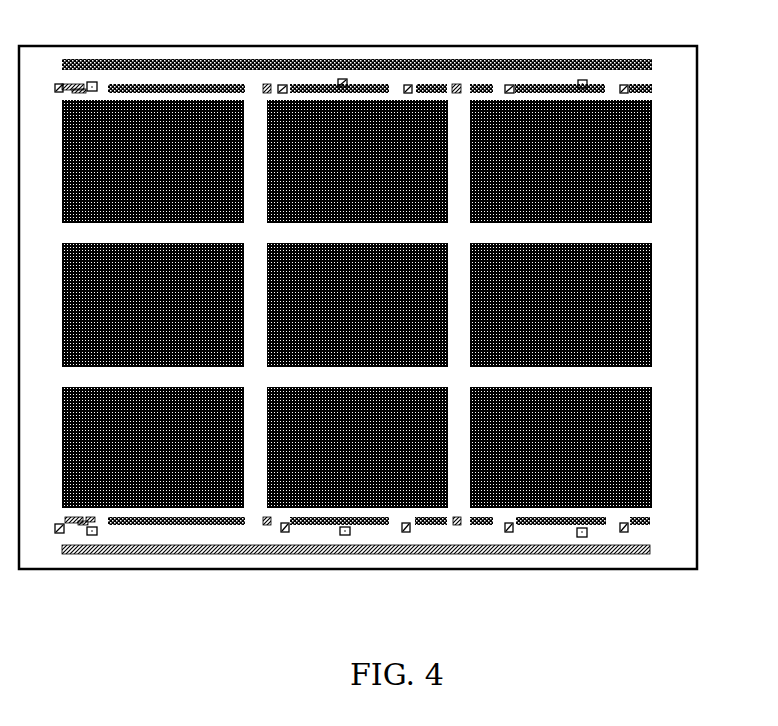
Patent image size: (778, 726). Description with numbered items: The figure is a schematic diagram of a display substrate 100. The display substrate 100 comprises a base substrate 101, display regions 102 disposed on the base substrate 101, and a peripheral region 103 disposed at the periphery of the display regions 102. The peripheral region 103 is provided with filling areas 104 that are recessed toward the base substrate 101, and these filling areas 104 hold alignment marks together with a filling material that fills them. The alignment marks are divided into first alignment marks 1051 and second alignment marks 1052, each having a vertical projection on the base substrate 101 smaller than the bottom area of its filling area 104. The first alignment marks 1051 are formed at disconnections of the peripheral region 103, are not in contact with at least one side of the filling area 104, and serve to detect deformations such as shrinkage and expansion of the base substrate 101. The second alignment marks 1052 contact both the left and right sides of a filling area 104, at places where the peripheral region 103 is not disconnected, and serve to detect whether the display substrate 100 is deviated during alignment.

The display substrate 100 is at (390, 308).
The base substrate 101 is at (690, 72).
The display regions 102 is at (652, 130).
The peripheral region 103 is at (600, 84).
The filling areas 104 is at (500, 84).
The first alignment marks 1051 is at (408, 86).
The second alignment marks 1052 is at (343, 82).